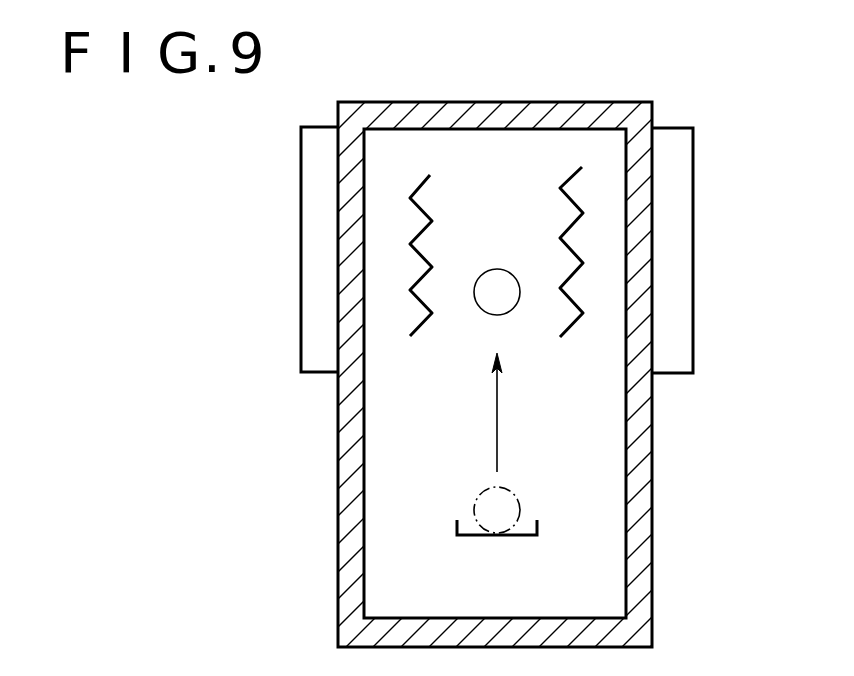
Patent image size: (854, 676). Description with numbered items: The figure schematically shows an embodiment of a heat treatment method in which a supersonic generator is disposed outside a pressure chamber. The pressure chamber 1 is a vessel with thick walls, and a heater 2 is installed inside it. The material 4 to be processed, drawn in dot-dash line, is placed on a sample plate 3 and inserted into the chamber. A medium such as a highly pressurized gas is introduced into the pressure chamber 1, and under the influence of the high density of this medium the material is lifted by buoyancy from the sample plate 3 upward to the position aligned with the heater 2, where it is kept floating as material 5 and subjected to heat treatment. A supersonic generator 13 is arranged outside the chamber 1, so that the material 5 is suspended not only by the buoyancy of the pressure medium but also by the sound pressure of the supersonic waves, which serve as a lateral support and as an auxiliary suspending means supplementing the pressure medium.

The pressure chamber 1 is at (341, 260).
The supersonic generator 13 is at (693, 166).
The heater 2 is at (422, 318).
The material in floating state 5 is at (500, 287).
The sample plate 3 is at (457, 530).
The material to be processed 4 is at (498, 511).